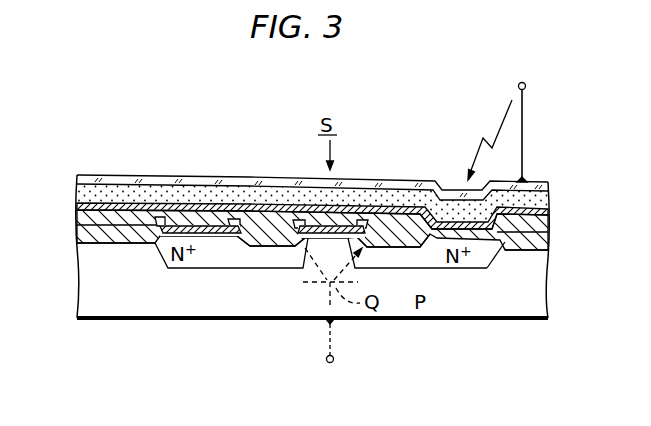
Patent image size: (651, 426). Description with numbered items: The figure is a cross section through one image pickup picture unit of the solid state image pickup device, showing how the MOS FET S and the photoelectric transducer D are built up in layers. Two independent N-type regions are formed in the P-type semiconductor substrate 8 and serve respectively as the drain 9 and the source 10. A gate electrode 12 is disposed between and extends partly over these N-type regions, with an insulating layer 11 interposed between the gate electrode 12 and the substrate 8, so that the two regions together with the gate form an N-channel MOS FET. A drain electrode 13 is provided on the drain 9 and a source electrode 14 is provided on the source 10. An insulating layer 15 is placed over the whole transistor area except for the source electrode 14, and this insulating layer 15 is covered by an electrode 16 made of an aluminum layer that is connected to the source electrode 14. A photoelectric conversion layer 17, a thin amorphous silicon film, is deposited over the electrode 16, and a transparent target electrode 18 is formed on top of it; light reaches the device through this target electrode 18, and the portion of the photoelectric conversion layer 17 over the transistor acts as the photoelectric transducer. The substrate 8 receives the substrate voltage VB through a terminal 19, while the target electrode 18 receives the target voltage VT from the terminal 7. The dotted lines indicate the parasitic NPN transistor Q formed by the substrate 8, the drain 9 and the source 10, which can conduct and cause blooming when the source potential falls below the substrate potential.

The terminal 7 is at (526, 86).
The P-type semiconductor substrate 8 is at (542, 291).
The drain 9 is at (218, 270).
The source 10 is at (400, 270).
The insulating layer 11 is at (80, 236).
The gate electrode 12 is at (340, 227).
The drain electrode 13 is at (170, 216).
The source electrode 14 is at (482, 270).
The insulating layer 15 is at (80, 210).
The electrode 16 is at (263, 205).
The photoelectric conversion layer 17 is at (408, 195).
The transparent electrode (target electrode) 18 is at (213, 180).
The terminal 19 is at (341, 357).